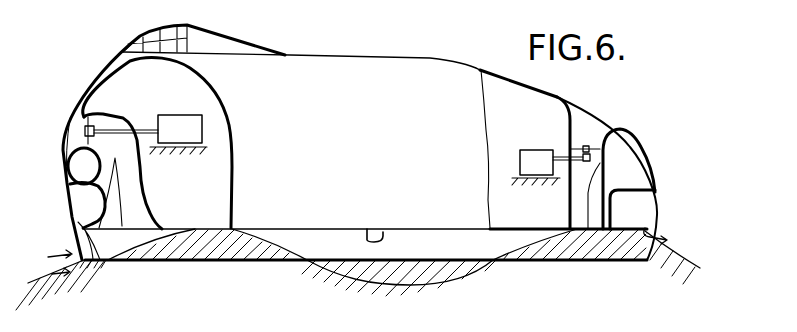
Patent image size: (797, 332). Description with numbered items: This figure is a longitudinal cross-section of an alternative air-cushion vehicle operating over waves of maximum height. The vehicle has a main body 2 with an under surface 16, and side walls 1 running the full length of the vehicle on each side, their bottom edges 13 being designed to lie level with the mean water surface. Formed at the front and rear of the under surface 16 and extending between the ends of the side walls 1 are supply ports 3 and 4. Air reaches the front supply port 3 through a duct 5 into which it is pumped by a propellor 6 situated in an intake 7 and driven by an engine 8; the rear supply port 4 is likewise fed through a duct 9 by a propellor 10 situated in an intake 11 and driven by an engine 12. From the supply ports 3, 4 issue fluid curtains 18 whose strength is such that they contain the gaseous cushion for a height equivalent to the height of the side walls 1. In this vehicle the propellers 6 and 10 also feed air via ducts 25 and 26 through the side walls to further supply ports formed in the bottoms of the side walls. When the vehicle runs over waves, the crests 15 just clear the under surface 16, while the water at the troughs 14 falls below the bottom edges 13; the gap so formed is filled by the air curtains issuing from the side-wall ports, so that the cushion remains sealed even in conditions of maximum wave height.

The side walls 1 is at (297, 233).
The main body 2 is at (350, 65).
The supply port 3 is at (77, 221).
The supply port 4 is at (651, 227).
The duct 5 is at (70, 197).
The propellor 6 is at (85, 124).
The intake 7 is at (66, 142).
The engine 8 is at (165, 117).
The duct 9 is at (646, 199).
The propellor 10 is at (594, 144).
The intake 11 is at (588, 122).
The engine 12 is at (531, 158).
The bottom edges 13 is at (220, 263).
The troughs 14 is at (425, 283).
The crests 15 is at (213, 228).
The under surface 16 is at (371, 229).
The fluid curtains 18 is at (50, 258).
The duct 25 is at (143, 216).
The duct 26 is at (568, 210).